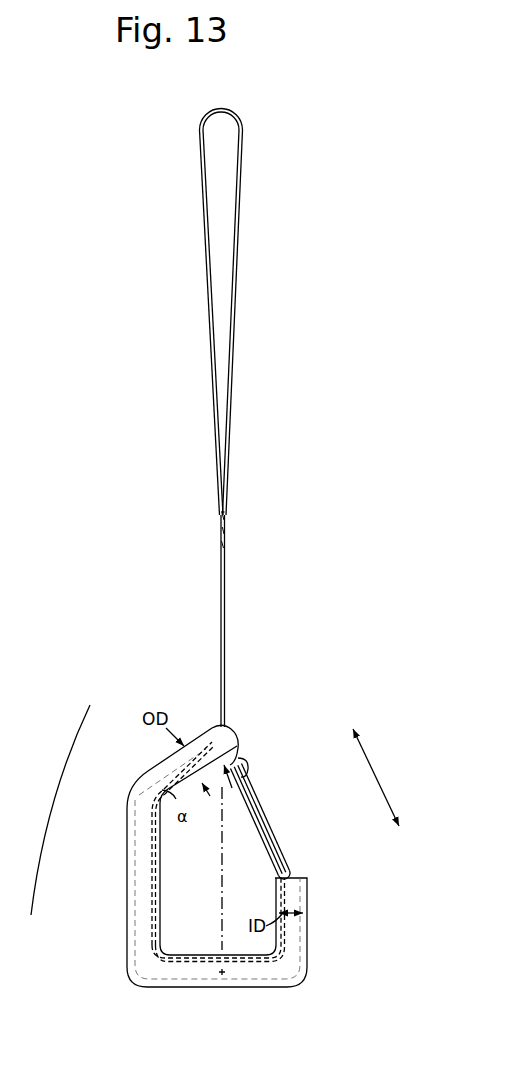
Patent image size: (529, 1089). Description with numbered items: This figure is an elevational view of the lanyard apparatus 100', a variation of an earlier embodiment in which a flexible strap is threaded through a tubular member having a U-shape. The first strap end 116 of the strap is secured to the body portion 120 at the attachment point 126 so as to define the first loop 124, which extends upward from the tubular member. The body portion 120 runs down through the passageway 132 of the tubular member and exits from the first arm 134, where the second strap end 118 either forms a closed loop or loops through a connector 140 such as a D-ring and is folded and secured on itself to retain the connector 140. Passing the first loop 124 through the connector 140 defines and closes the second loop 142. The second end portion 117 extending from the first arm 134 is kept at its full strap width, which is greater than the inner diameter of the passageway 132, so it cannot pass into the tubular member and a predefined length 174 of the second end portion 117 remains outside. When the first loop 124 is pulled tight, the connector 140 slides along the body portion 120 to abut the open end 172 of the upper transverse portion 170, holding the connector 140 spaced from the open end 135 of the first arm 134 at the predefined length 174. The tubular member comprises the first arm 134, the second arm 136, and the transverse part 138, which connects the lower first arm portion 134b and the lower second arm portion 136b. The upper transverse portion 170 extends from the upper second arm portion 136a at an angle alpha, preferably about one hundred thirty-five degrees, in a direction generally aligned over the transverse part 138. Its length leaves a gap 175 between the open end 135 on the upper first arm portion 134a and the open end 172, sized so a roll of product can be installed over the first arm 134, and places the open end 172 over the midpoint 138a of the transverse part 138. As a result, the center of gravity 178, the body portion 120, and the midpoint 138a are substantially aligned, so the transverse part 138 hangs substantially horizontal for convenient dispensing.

The lanyard apparatus 100' is at (100, 131).
The first loop 124 is at (242, 240).
The first strap end 116 is at (220, 524).
The attachment point 126 is at (229, 513).
The body portion 120 is at (222, 583).
The connector 140 is at (223, 747).
The open end of upper transverse portion 172 is at (210, 740).
The upper transverse portion 170 is at (162, 780).
The second arm 136 is at (144, 890).
The upper second arm portion 136a is at (140, 813).
The lower second arm portion 136b is at (142, 946).
The transverse part 138 is at (176, 975).
The midpoint of transverse part 138a is at (221, 973).
The center of gravity 178 is at (221, 932).
The second loop 142 is at (66, 731).
The predefined length 174 is at (362, 742).
The second strap end 118 is at (246, 773).
The second end portion 117 is at (273, 838).
The gap 175 is at (257, 850).
The passageway 132 is at (290, 874).
The open end of first arm 135 is at (292, 877).
The first arm 134 is at (297, 929).
The upper first arm portion 134a is at (292, 895).
The lower first arm portion 134b is at (292, 950).